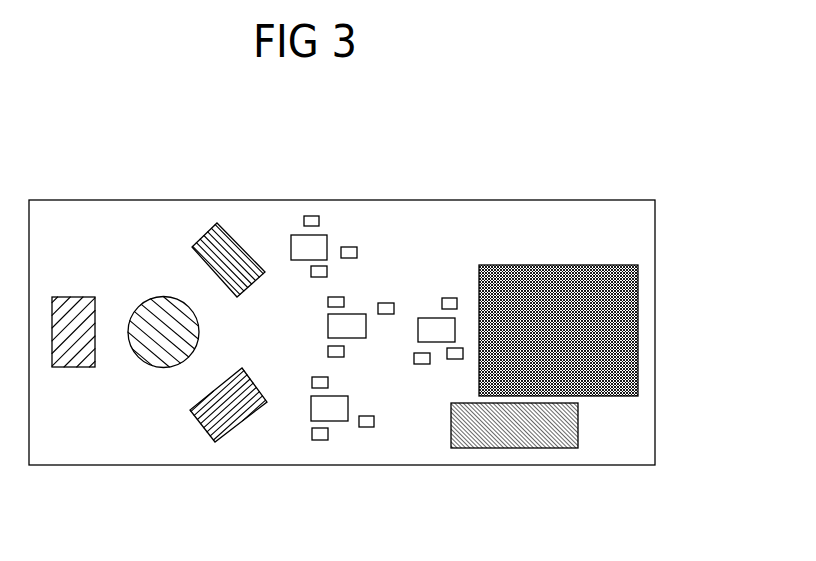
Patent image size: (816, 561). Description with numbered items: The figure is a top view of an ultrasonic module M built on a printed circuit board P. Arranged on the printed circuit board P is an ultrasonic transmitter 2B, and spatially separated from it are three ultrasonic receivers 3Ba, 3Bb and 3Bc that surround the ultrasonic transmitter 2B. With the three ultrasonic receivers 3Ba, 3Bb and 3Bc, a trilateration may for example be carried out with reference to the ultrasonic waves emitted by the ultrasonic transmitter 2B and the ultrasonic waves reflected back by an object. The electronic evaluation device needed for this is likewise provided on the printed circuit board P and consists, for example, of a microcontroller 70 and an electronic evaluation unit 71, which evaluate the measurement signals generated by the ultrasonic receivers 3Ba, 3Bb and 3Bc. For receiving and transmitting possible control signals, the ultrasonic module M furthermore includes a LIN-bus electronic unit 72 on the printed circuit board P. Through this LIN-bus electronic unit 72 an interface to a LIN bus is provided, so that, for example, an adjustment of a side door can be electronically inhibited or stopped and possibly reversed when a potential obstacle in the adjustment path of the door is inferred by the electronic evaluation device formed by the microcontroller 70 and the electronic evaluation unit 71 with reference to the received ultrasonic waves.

The ultrasonic module M is at (667, 257).
The printed circuit board P is at (644, 440).
The ultrasonic transmitter 2B is at (148, 297).
The ultrasonic receiver 3Ba is at (78, 362).
The ultrasonic receiver 3Bb is at (237, 263).
The ultrasonic receiver 3Bc is at (227, 432).
The microcontroller 70 is at (568, 267).
The electronic evaluation unit 71 is at (380, 350).
The LIN-bus electronic unit 72 is at (537, 448).